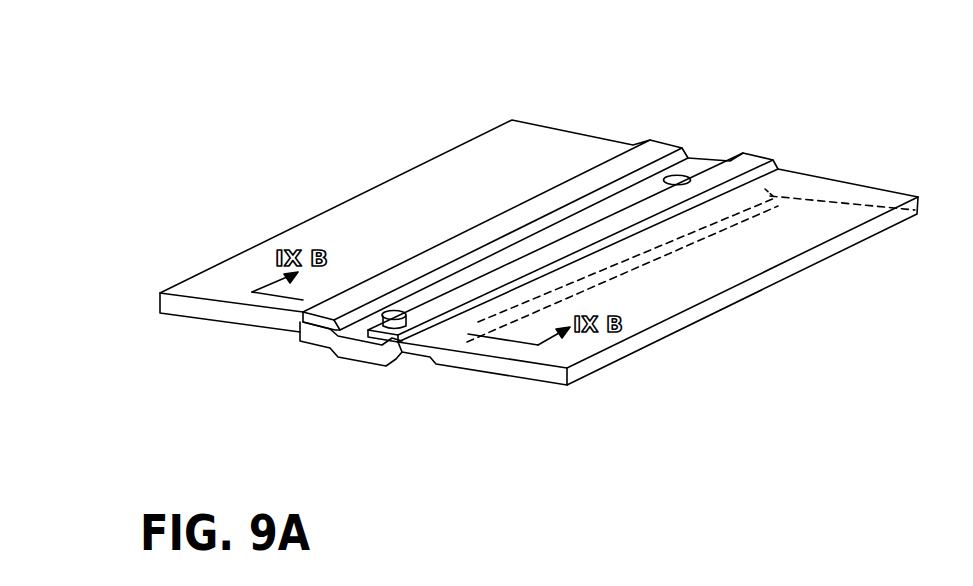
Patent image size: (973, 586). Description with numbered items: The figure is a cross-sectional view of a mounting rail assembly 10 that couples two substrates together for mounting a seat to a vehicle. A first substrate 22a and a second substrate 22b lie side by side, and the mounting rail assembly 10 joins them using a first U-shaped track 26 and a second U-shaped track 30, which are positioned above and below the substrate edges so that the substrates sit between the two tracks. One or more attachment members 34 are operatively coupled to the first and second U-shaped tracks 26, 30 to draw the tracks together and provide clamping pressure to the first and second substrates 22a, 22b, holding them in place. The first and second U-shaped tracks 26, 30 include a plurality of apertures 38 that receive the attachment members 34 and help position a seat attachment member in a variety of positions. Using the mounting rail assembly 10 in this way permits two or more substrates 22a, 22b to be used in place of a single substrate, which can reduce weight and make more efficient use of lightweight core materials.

The mounting rail assembly 10 is at (748, 151).
The first substrate 22a is at (478, 165).
The second substrate 22b is at (830, 217).
The first U-shaped track 26 is at (612, 172).
The second U-shaped track 30 is at (305, 347).
The attachment member 34 is at (372, 332).
The aperture 38 is at (690, 176).